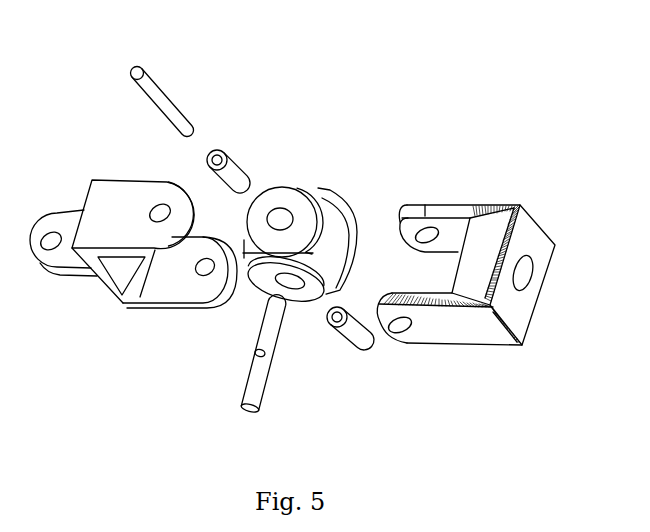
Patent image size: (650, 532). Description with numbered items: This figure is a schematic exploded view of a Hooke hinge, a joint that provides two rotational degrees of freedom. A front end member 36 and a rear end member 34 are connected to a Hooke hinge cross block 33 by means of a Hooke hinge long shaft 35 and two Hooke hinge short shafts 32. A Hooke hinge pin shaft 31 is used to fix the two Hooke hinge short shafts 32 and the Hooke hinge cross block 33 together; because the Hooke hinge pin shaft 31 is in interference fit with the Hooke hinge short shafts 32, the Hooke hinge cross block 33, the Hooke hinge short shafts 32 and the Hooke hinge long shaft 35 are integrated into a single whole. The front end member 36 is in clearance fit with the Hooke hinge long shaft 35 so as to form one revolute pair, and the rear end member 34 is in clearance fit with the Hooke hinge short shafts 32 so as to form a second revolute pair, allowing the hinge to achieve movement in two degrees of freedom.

The Hooke hinge pin shaft 31 is at (180, 97).
The Hooke hinge short shafts 32 is at (232, 173).
The Hooke hinge cross block 33 is at (303, 202).
The rear end member 34 is at (95, 228).
The Hooke hinge long shaft 35 is at (267, 385).
The front end member 36 is at (435, 323).